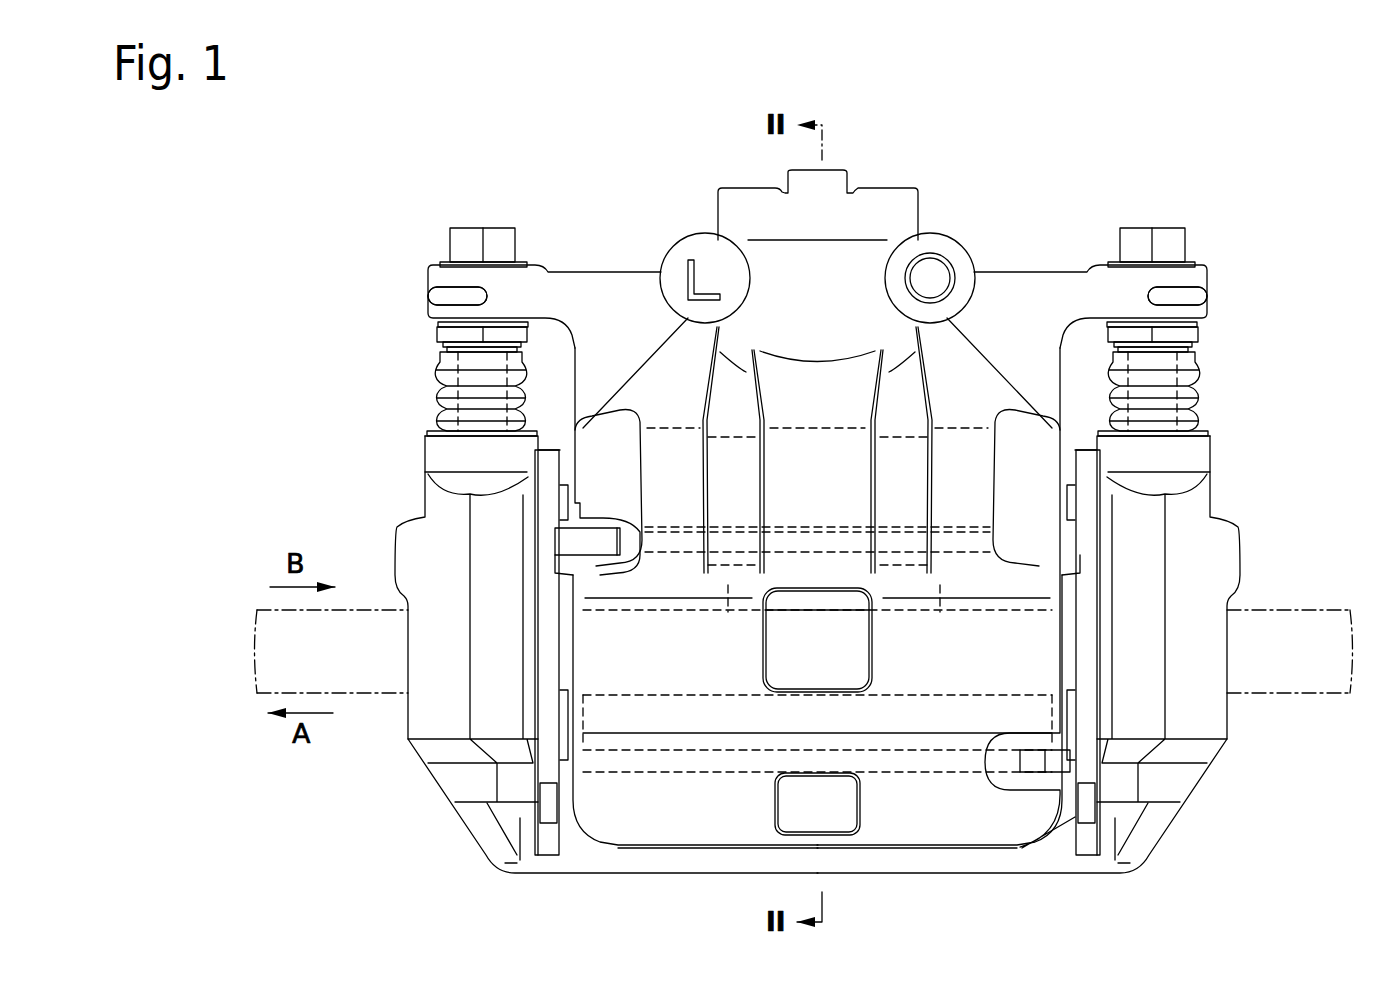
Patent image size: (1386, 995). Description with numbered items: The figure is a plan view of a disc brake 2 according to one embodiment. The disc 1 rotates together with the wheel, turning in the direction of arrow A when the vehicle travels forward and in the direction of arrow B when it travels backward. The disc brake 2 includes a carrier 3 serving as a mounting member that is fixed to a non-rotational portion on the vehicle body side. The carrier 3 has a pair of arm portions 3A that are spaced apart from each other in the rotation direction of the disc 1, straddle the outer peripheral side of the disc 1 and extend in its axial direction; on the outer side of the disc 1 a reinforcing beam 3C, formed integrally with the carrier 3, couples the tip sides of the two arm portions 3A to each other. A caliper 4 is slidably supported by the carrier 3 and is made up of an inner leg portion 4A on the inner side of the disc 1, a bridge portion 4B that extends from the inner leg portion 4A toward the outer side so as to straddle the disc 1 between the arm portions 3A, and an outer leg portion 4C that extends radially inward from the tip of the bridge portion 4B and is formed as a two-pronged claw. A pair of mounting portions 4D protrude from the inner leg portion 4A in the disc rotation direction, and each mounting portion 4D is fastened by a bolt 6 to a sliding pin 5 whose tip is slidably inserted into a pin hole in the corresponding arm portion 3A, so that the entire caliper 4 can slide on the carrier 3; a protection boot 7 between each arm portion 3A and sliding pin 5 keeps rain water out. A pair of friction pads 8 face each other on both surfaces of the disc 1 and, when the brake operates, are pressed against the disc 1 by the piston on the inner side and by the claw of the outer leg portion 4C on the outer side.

The disc 1 is at (1298, 662).
The disc brake 2 is at (436, 840).
The carrier 3 is at (1184, 813).
The arm portions 3A is at (455, 505).
The reinforcing beam 3C is at (890, 858).
The caliper 4 is at (615, 266).
The inner leg portion 4A is at (860, 283).
The bridge portion 4B is at (667, 653).
The outer leg portion 4C is at (992, 800).
The mounting portions 4D is at (466, 298).
The sliding pin 5 is at (438, 364).
The bolt 6 is at (478, 243).
The protection boot 7 is at (438, 393).
The friction pads 8 is at (728, 612).